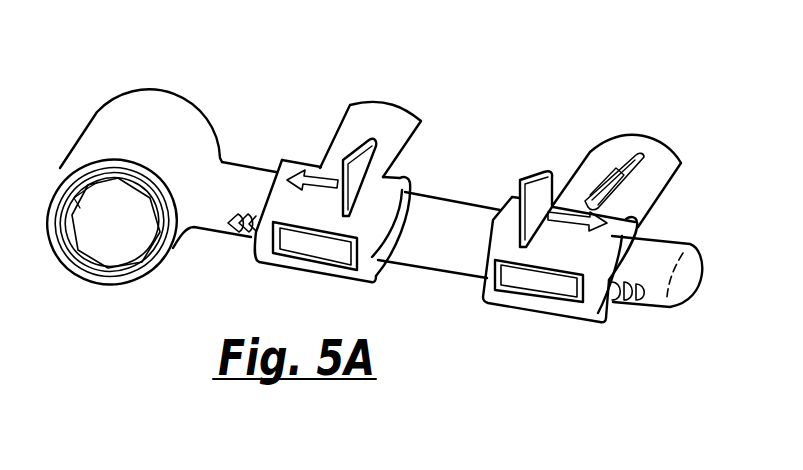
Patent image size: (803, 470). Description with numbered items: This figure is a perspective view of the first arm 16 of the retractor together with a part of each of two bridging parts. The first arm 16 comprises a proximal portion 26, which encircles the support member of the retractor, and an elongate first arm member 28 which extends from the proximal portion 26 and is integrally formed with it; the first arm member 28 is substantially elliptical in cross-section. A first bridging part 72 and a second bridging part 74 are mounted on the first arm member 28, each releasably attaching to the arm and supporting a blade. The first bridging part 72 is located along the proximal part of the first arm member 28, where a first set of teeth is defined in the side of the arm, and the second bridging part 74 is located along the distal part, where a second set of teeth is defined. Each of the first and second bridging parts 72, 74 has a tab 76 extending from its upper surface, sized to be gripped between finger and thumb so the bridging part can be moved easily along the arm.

The first arm 16 is at (407, 282).
The proximal portion 26 is at (150, 113).
The first arm member 28 is at (457, 223).
The first bridging part 72 is at (247, 263).
The second bridging part 74 is at (607, 332).
The tab 76 is at (355, 153).